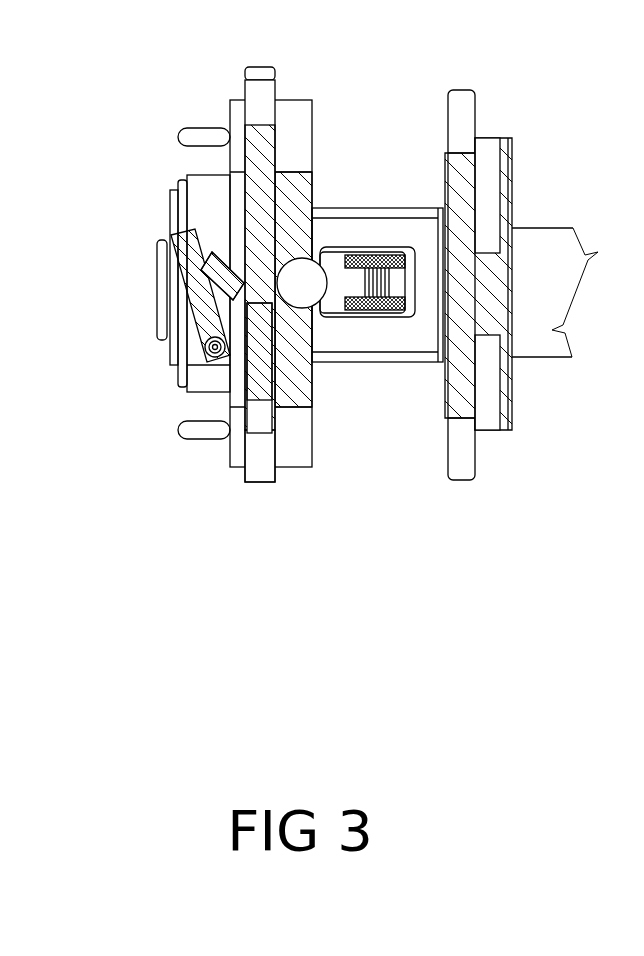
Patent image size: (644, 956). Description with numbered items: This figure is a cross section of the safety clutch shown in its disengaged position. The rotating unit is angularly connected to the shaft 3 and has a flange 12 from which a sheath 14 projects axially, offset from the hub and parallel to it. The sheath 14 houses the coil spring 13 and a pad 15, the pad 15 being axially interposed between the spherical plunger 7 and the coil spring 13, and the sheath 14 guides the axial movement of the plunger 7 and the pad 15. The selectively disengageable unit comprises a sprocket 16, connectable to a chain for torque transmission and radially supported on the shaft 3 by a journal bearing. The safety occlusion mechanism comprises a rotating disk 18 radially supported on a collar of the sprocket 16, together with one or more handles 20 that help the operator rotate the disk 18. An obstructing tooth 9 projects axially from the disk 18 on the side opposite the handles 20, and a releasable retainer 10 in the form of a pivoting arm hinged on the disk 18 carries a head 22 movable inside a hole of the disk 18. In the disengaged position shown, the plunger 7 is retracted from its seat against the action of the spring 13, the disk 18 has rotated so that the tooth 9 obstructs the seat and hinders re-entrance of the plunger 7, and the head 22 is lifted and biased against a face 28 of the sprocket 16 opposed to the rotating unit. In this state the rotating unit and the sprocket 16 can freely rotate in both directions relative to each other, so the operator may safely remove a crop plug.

The shaft 3 is at (563, 245).
The biased plunger 7 is at (292, 278).
The obstructing element (tooth) 9 is at (262, 328).
The releasable retainer 10 is at (204, 335).
The flange 12 is at (303, 463).
The coil spring 13 is at (380, 306).
The sheath 14 is at (342, 313).
The pad 15 is at (332, 275).
The sprocket 16 is at (258, 102).
The rotating disk 18 is at (237, 455).
The handles 20 is at (212, 430).
The head 22 is at (218, 272).
The face or surface 28 is at (238, 254).